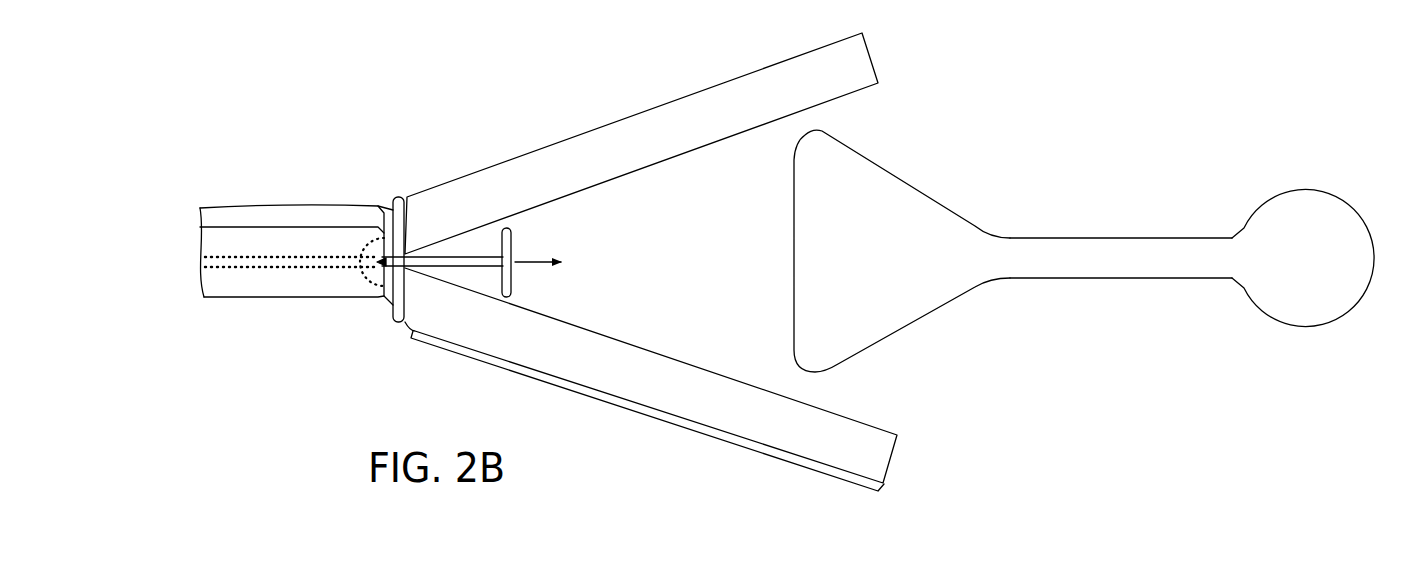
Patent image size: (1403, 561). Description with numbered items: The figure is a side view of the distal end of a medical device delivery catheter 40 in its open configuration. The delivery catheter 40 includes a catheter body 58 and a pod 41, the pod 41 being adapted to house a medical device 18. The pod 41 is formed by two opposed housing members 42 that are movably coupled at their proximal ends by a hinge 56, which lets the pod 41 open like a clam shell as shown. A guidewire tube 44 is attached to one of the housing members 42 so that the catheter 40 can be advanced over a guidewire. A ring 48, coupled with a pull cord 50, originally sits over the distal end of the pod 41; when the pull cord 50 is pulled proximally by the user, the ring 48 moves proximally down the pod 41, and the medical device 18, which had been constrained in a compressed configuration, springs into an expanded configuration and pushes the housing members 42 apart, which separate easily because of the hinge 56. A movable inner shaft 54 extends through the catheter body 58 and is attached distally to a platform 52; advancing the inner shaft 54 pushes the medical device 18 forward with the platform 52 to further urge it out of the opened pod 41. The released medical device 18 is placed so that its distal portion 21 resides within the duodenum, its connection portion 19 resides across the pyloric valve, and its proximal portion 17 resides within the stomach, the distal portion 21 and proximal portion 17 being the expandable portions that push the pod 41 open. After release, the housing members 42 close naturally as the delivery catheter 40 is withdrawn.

The proximal portion 17 is at (893, 204).
The medical device 18 is at (1121, 254).
The connection portion 19 is at (1115, 262).
The distal portion 21 is at (1305, 207).
The medical device delivery catheter 40 is at (623, 264).
The pod 41 is at (790, 53).
The housing members 42 is at (651, 264).
The guidewire tube 44 is at (692, 433).
The ring 48 is at (399, 196).
The pull cord 50 is at (286, 277).
The platform 52 is at (516, 252).
The inner shaft 54 is at (282, 272).
The hinge 56 is at (377, 273).
The catheter body 58 is at (216, 303).